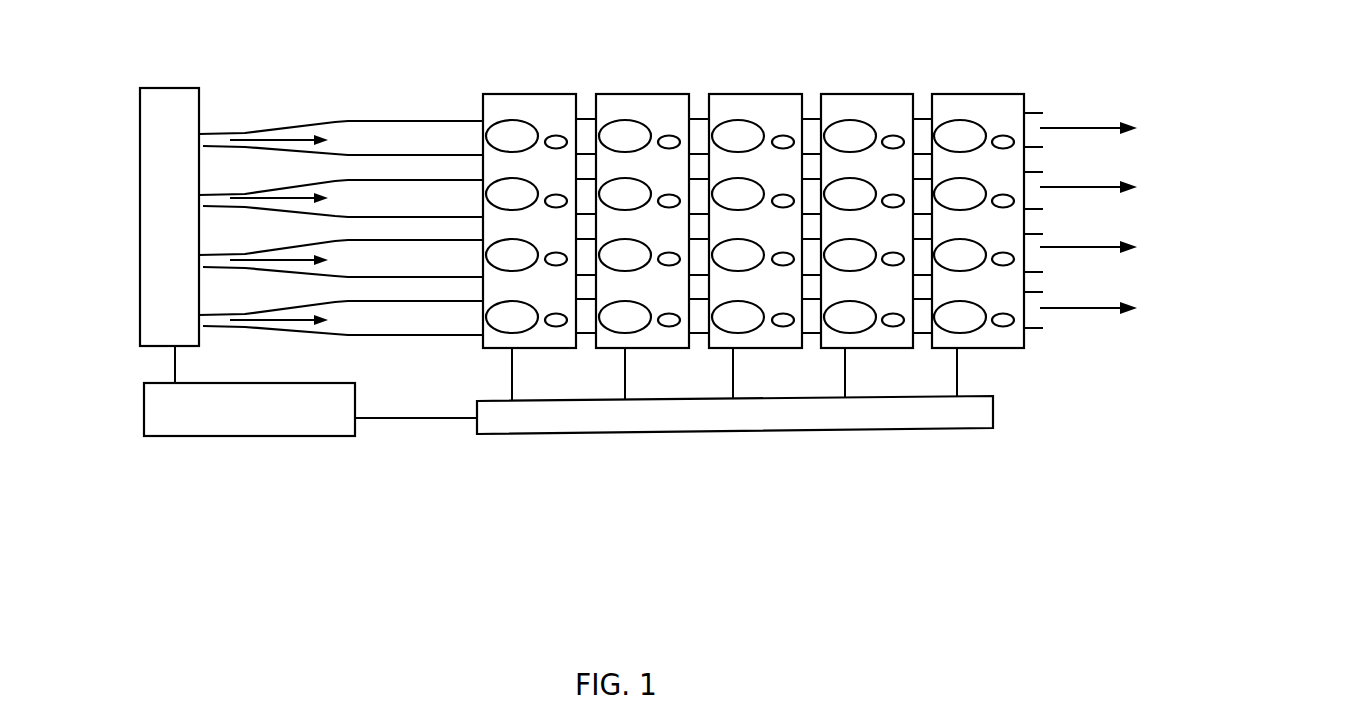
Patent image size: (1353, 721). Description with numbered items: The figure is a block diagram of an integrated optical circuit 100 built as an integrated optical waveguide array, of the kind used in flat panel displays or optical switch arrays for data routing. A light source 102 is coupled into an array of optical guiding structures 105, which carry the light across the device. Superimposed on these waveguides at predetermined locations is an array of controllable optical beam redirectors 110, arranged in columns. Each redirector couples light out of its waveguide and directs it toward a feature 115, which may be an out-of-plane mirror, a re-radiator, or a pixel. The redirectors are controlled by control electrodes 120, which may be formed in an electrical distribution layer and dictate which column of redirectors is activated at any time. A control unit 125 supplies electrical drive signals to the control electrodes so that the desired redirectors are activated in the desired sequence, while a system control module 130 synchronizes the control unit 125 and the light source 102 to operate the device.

The integrated optical circuit 100 is at (1152, 444).
The light source 102 is at (160, 310).
The optical guiding structures 105 is at (362, 120).
The optical beam redirectors 110 is at (514, 121).
The feature 115 is at (564, 139).
The control electrodes 120 is at (485, 355).
The control unit 125 is at (697, 430).
The system control module 130 is at (208, 412).